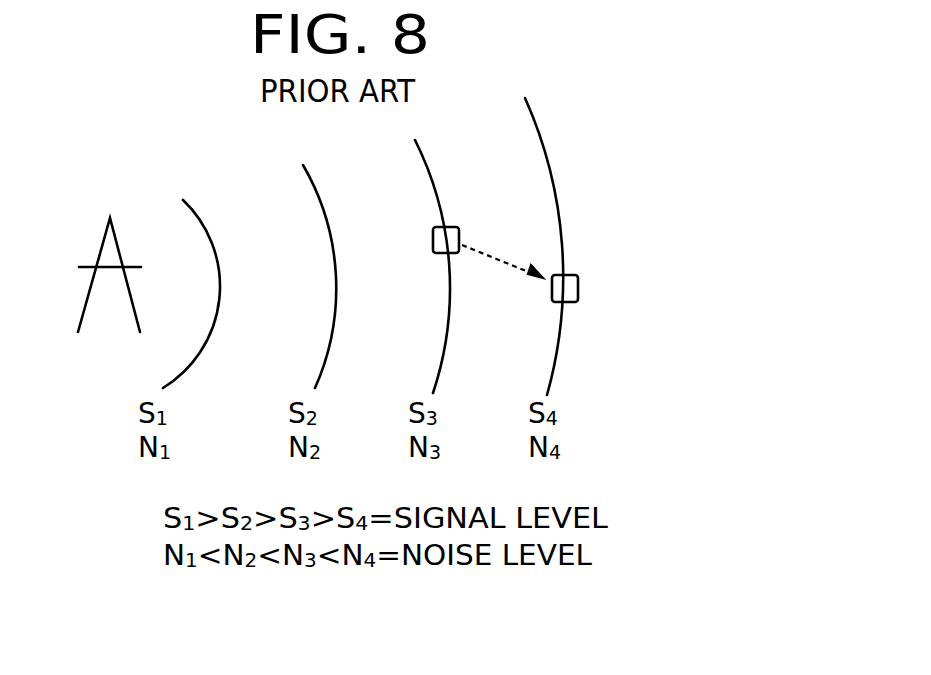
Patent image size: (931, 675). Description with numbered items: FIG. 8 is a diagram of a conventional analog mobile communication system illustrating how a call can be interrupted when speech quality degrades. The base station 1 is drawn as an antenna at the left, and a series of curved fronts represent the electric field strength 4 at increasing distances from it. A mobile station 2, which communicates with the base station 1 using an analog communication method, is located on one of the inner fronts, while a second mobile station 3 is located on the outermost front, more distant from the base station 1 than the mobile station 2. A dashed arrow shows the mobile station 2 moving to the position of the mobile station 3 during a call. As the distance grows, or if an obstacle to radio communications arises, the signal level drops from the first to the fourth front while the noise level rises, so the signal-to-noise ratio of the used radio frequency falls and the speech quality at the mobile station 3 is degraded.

The base station 1 is at (92, 260).
The mobile station 2 is at (448, 228).
The mobile station 3 is at (578, 280).
The electric field strength 4 is at (550, 170).